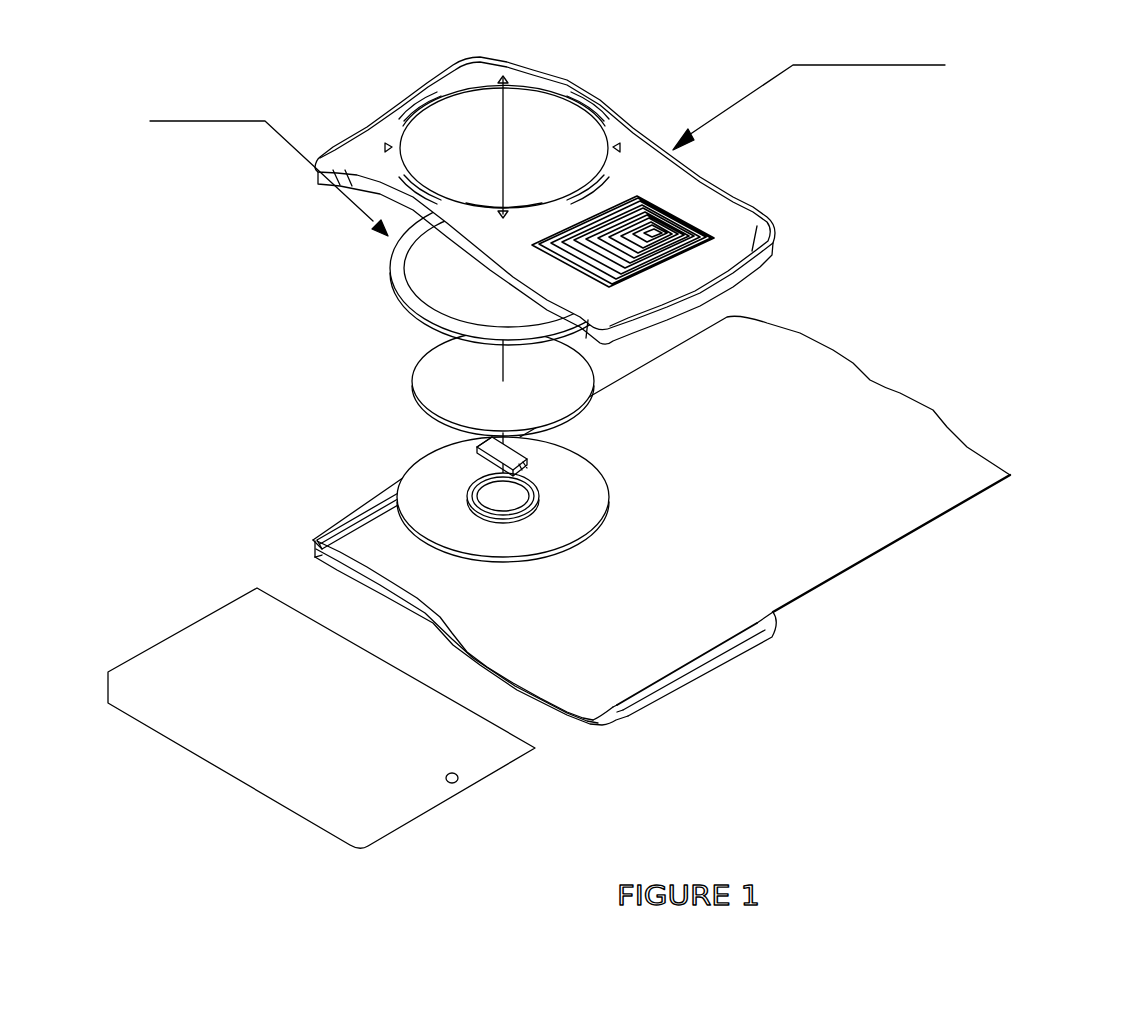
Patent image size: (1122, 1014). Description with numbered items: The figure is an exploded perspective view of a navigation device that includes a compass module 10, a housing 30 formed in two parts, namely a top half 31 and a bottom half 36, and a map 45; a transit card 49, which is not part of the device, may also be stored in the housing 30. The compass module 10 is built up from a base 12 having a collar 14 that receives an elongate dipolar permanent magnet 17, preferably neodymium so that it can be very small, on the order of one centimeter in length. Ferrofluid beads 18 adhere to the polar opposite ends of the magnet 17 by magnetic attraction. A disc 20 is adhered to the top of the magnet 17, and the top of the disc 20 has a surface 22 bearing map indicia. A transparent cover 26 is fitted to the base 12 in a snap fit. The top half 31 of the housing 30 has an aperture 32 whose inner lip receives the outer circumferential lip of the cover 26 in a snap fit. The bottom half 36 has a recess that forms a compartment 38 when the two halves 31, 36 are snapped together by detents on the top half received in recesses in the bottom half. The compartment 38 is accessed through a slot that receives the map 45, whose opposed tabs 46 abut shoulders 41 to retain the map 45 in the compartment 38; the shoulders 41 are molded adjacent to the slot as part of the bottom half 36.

The compass module 10 is at (249, 173).
The base 12 is at (435, 497).
The collar 14 is at (470, 482).
The elongate dipolar permanent magnet 17 is at (510, 470).
The ferrofluid beads 18 is at (477, 447).
The disc 20 is at (478, 432).
The surface 22 is at (455, 358).
The transparent cover 26 is at (410, 292).
The housing 30 is at (828, 101).
The top half 31 is at (442, 181).
The aperture 32 is at (540, 150).
The bottom half 36 is at (347, 520).
The compartment 38 is at (380, 518).
The shoulders 41 is at (762, 622).
The map 45 is at (813, 417).
The tabs 46 is at (316, 541).
The transit card 49 is at (280, 625).